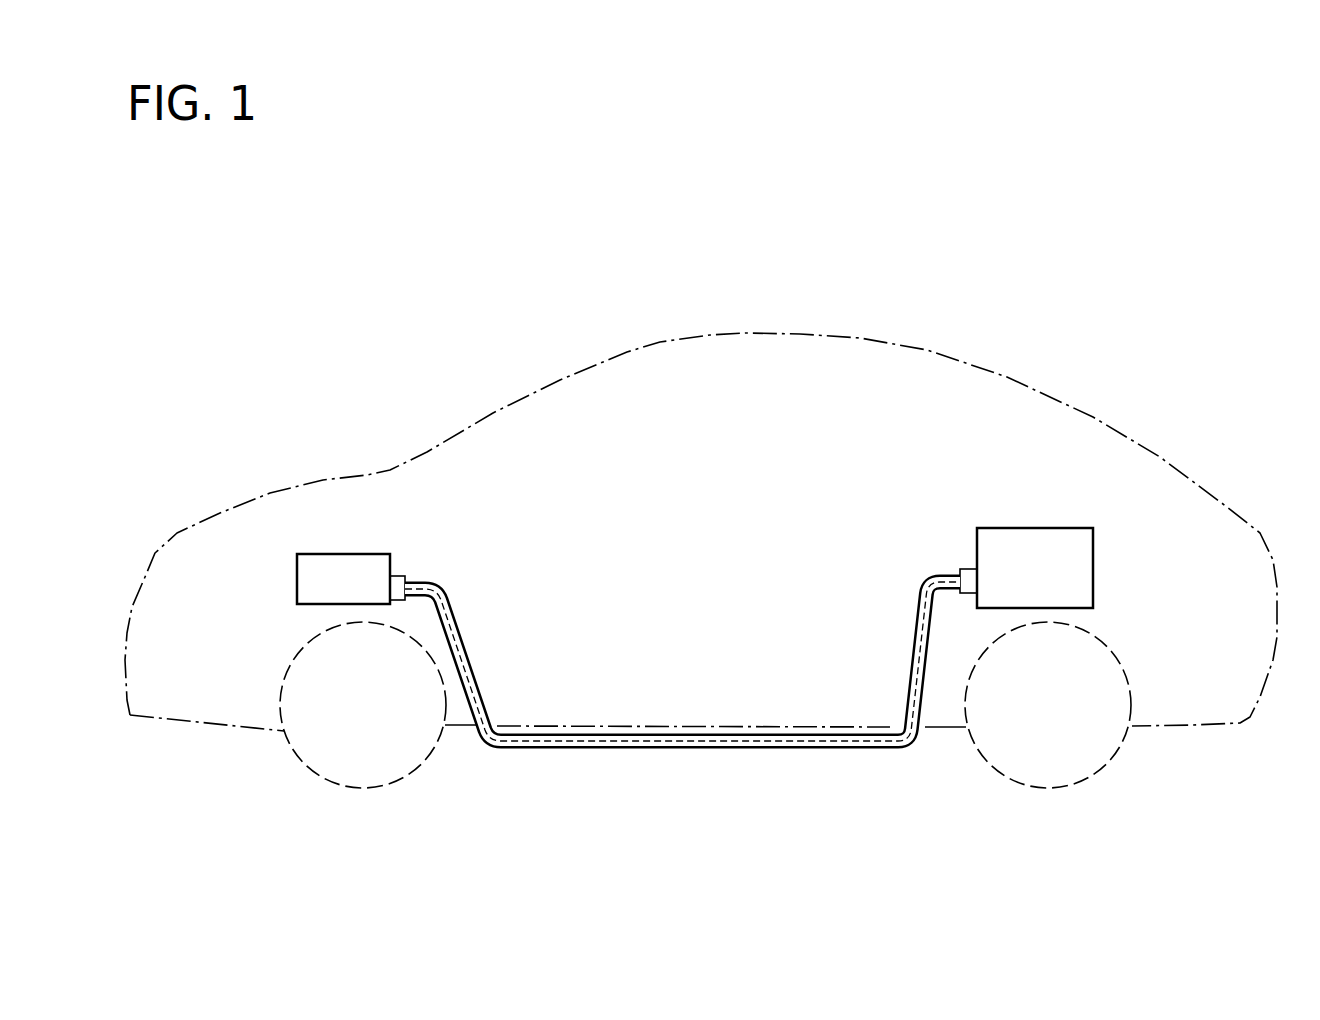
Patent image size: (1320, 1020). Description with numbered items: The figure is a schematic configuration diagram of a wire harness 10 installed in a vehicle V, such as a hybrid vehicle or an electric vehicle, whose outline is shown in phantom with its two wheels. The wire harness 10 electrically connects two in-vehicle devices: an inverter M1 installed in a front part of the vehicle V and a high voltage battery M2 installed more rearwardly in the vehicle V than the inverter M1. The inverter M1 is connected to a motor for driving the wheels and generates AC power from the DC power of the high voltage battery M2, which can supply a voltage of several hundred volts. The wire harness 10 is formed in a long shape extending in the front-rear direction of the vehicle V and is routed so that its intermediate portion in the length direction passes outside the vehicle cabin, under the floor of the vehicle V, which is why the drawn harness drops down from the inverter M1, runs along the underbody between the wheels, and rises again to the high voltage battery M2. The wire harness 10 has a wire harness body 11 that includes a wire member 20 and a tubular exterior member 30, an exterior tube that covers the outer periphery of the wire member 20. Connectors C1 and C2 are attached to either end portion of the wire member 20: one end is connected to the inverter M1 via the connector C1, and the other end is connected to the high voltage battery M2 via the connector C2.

The vehicle V is at (1007, 373).
The wire harness 10 is at (688, 597).
The wire harness body 11 is at (682, 661).
The wire member 20 is at (925, 633).
The exterior member 30 is at (918, 662).
The inverter M1 is at (349, 554).
The high voltage battery M2 is at (1063, 528).
The connector C1 is at (395, 576).
The connector C2 is at (970, 569).